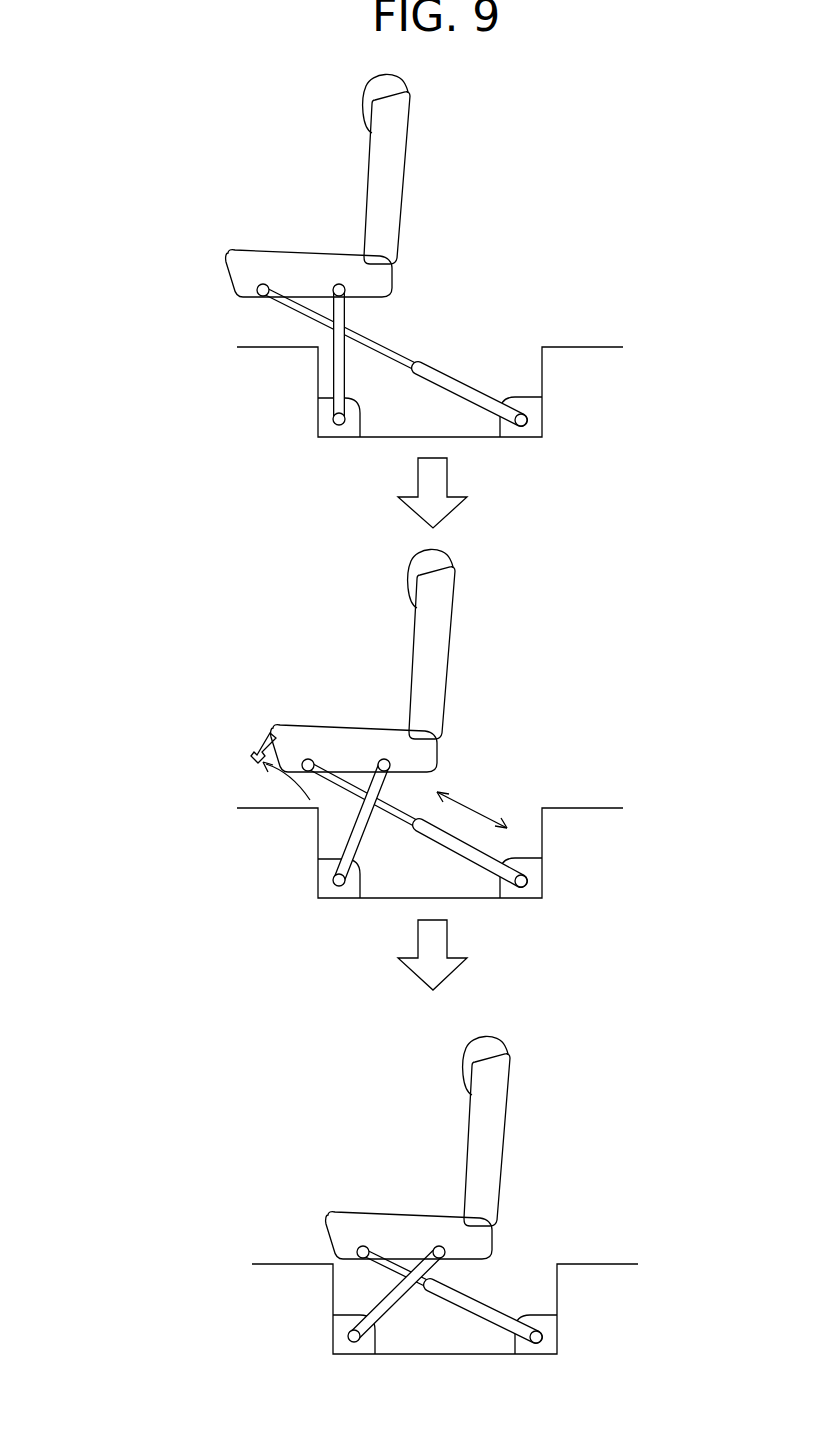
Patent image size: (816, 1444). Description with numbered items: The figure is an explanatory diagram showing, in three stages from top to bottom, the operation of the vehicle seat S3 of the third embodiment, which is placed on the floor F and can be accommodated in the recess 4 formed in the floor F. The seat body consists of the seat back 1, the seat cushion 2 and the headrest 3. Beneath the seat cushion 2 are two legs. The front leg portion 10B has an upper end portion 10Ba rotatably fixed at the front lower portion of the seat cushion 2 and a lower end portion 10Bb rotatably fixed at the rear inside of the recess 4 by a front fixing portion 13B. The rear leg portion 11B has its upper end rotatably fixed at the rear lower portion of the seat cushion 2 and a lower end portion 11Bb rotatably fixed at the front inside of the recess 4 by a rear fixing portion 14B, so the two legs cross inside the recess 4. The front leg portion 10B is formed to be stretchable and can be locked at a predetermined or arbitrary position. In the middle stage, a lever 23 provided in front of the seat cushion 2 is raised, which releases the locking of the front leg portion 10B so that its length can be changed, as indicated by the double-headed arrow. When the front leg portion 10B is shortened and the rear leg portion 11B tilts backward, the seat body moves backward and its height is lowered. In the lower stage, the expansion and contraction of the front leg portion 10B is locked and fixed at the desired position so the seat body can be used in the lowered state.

The vehicle seat S3 is at (153, 152).
The seat back 1 is at (380, 182).
The seat cushion 2 is at (260, 252).
The headrest 3 is at (372, 79).
The recess 4 is at (499, 352).
The floor F is at (585, 346).
The front leg portion 10B is at (450, 354).
The upper end portion 10Ba is at (250, 288).
The lower end portion 10Bb is at (528, 418).
The rear leg portion 11B is at (335, 365).
The lower end portion 11Bb is at (333, 421).
The front fixing portion 13B is at (508, 428).
The rear fixing portion 14B is at (350, 428).
The lever 23 is at (254, 737).